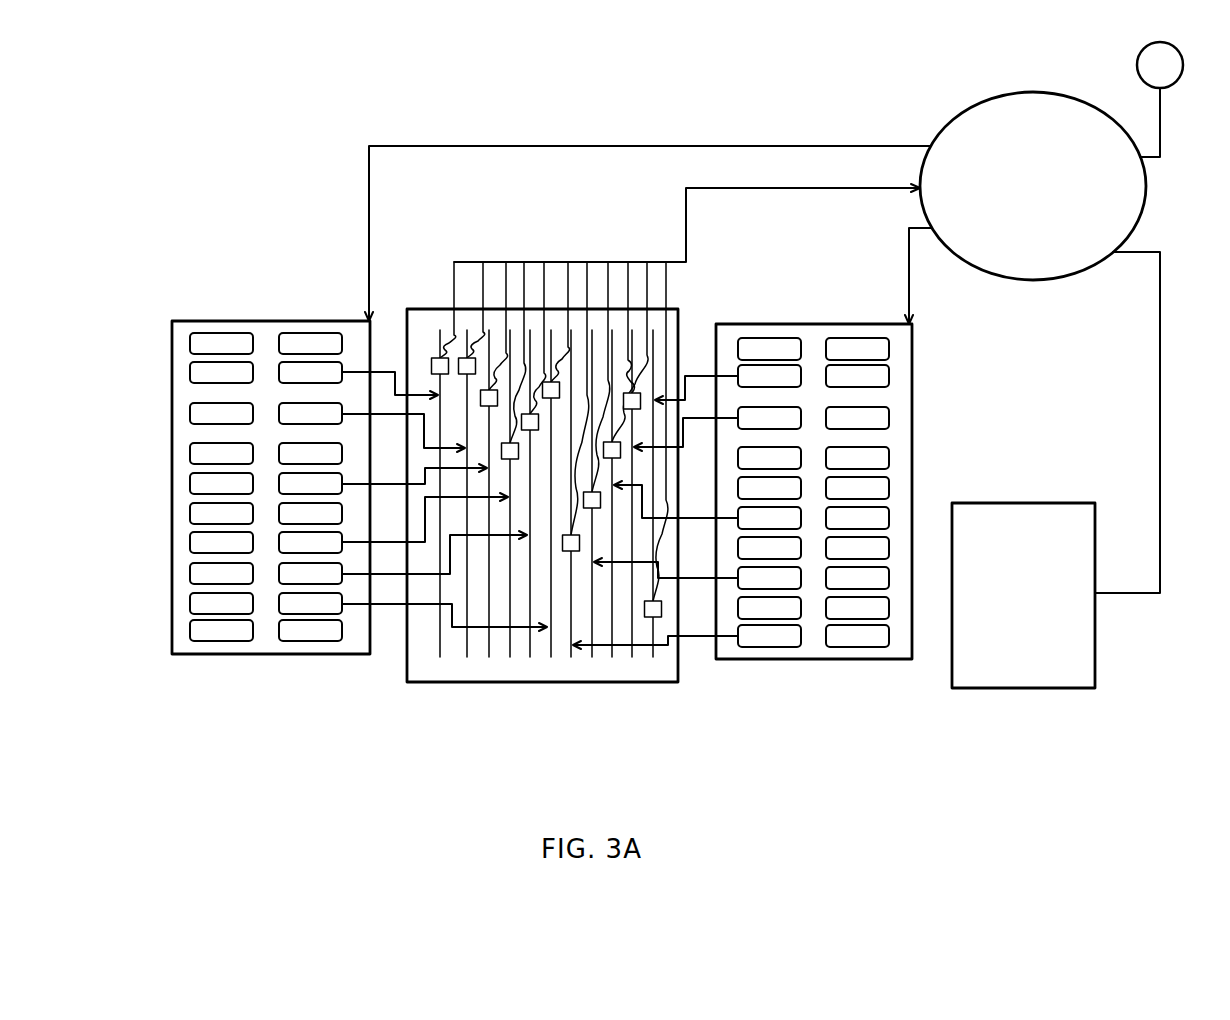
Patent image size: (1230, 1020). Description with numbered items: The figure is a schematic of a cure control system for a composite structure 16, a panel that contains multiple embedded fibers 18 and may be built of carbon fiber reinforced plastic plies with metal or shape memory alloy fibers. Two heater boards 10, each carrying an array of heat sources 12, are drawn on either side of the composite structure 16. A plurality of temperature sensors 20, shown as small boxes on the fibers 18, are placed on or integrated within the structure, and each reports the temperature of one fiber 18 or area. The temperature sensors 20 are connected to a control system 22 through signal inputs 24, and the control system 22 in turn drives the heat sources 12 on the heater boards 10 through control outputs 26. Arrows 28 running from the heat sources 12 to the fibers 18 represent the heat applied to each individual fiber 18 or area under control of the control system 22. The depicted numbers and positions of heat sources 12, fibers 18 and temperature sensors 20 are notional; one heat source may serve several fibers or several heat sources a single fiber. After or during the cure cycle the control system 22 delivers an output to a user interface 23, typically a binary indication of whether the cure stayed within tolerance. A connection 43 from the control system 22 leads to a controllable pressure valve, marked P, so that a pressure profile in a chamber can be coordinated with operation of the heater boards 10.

The heater board 10 is at (210, 321).
The heat source 12 is at (320, 345).
The composite structure 16 is at (437, 682).
The fiber 18 is at (612, 650).
The temperature sensor 20 is at (570, 555).
The control system 22 is at (1053, 282).
The user interface 23 is at (1023, 503).
The signal input 24 is at (803, 188).
The control output 26 is at (861, 146).
The arrow 28 is at (695, 636).
The connection 43 is at (1160, 116).